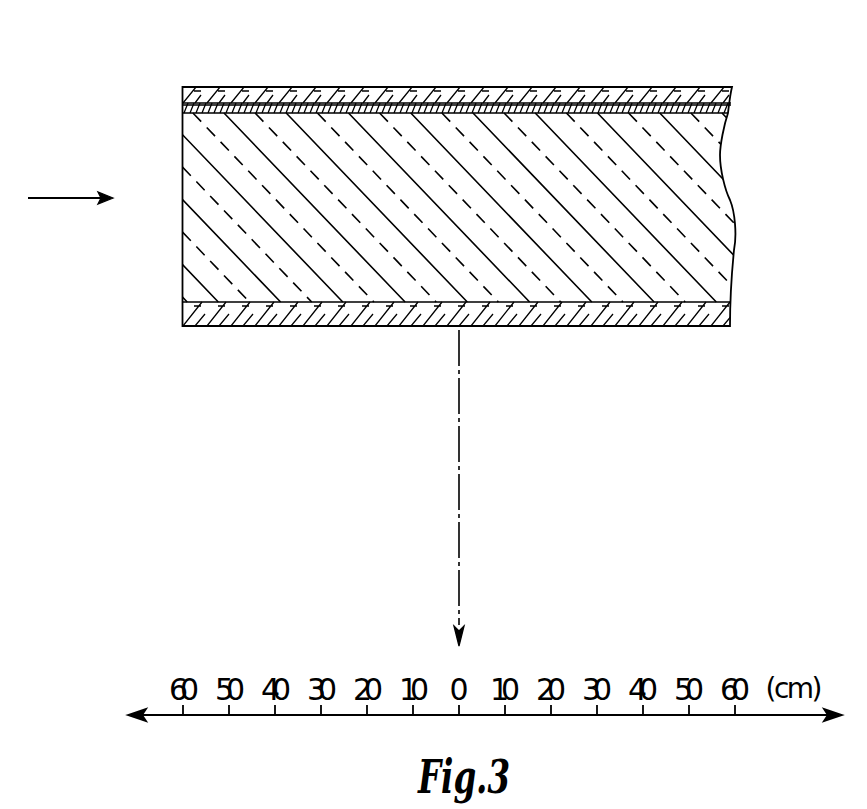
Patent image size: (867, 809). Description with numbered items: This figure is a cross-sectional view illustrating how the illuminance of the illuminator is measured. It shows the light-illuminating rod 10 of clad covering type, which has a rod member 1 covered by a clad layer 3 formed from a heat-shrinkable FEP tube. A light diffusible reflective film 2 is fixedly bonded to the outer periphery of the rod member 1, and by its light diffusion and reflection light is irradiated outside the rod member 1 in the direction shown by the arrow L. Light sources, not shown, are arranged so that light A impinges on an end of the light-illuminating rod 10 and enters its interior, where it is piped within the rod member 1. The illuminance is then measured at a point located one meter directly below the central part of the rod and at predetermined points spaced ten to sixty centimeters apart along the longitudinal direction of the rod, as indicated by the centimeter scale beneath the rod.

The light-illuminating rod 10 is at (493, 181).
The rod member 1 is at (720, 153).
The light diffusible reflective film 2 is at (730, 112).
The clad layer 3 is at (732, 95).
The arrow L is at (459, 397).
The light A is at (70, 186).